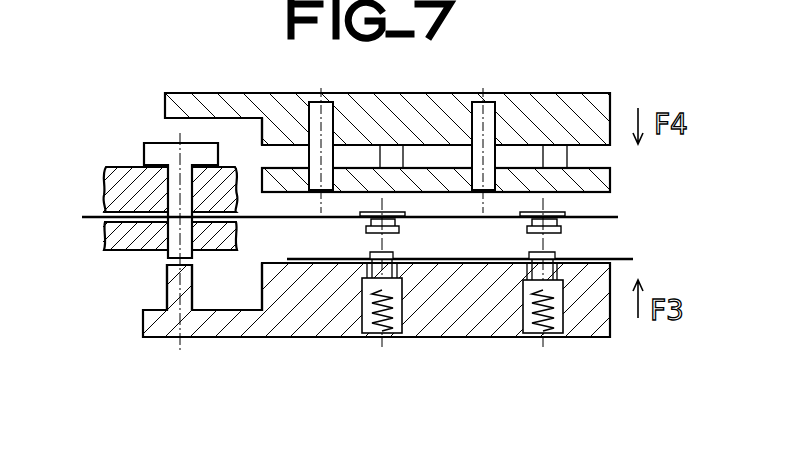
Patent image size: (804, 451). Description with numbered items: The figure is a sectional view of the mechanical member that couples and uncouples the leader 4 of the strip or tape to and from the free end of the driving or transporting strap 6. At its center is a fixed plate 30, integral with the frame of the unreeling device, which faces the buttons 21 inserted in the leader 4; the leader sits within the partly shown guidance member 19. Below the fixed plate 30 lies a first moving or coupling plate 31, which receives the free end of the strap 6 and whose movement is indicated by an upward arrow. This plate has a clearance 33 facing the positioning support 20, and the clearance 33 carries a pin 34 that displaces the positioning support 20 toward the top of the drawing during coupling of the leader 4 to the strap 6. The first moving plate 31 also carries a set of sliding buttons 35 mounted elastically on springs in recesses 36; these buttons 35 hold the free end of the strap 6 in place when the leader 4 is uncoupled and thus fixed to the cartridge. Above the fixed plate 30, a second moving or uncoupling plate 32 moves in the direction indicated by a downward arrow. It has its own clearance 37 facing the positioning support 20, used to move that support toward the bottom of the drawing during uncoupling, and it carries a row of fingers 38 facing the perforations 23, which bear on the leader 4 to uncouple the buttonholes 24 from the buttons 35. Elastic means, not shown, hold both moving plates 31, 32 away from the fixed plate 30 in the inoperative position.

The leader 4 is at (82, 218).
The strap 6 is at (622, 258).
The guidance member 19 is at (103, 188).
The positioning support 20 is at (160, 150).
The buttons 21 is at (565, 213).
The perforations 23 is at (484, 218).
The buttonholes 24 is at (565, 255).
The fixed plate 30 is at (612, 187).
The first moving plate 31 is at (592, 330).
The second moving plate 32 is at (578, 112).
The clearance 33 is at (210, 310).
The pin 34 is at (165, 293).
The sliding buttons 35 is at (372, 250).
The recesses 36 is at (362, 296).
The clearance 37 is at (244, 141).
The fingers 38 is at (320, 110).